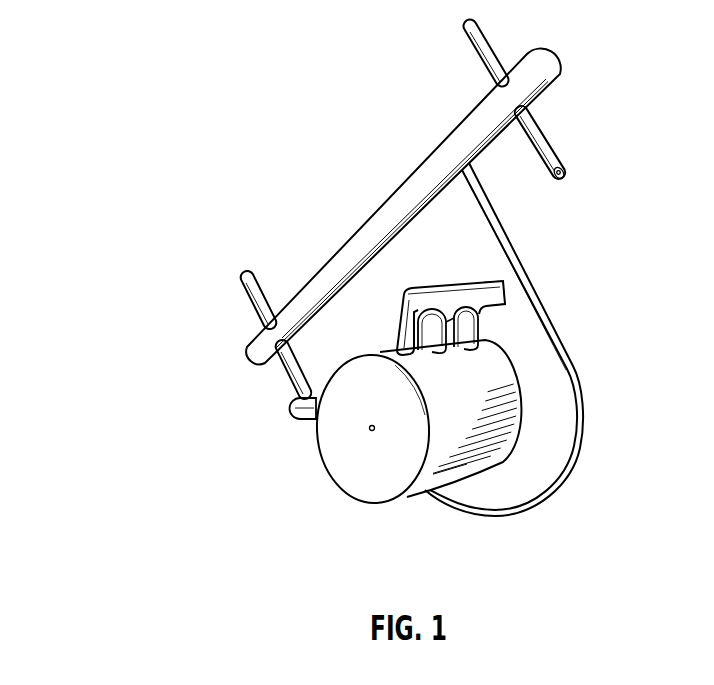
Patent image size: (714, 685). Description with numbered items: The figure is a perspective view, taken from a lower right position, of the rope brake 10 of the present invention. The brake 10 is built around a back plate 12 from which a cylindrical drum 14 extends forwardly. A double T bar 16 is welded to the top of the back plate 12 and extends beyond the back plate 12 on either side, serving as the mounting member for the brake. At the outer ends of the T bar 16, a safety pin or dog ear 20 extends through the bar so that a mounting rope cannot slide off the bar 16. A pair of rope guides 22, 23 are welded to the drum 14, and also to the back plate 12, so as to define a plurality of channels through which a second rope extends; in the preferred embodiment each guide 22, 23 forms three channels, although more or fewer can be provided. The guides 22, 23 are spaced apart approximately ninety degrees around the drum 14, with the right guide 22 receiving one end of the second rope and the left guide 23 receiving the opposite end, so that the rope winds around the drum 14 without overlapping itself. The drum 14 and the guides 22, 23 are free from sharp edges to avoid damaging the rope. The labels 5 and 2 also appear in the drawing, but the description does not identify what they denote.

The rope brake 10 is at (118, 43).
The double T bar 16 is at (365, 232).
The safety pin or dog ear 20 is at (550, 153).
The pin 5 is at (243, 278).
The back plate 12 is at (537, 347).
The cylindrical drum 14 is at (416, 497).
The right rope guide 22 is at (290, 407).
The clip 2 is at (433, 289).
The left rope guide 23 is at (483, 283).